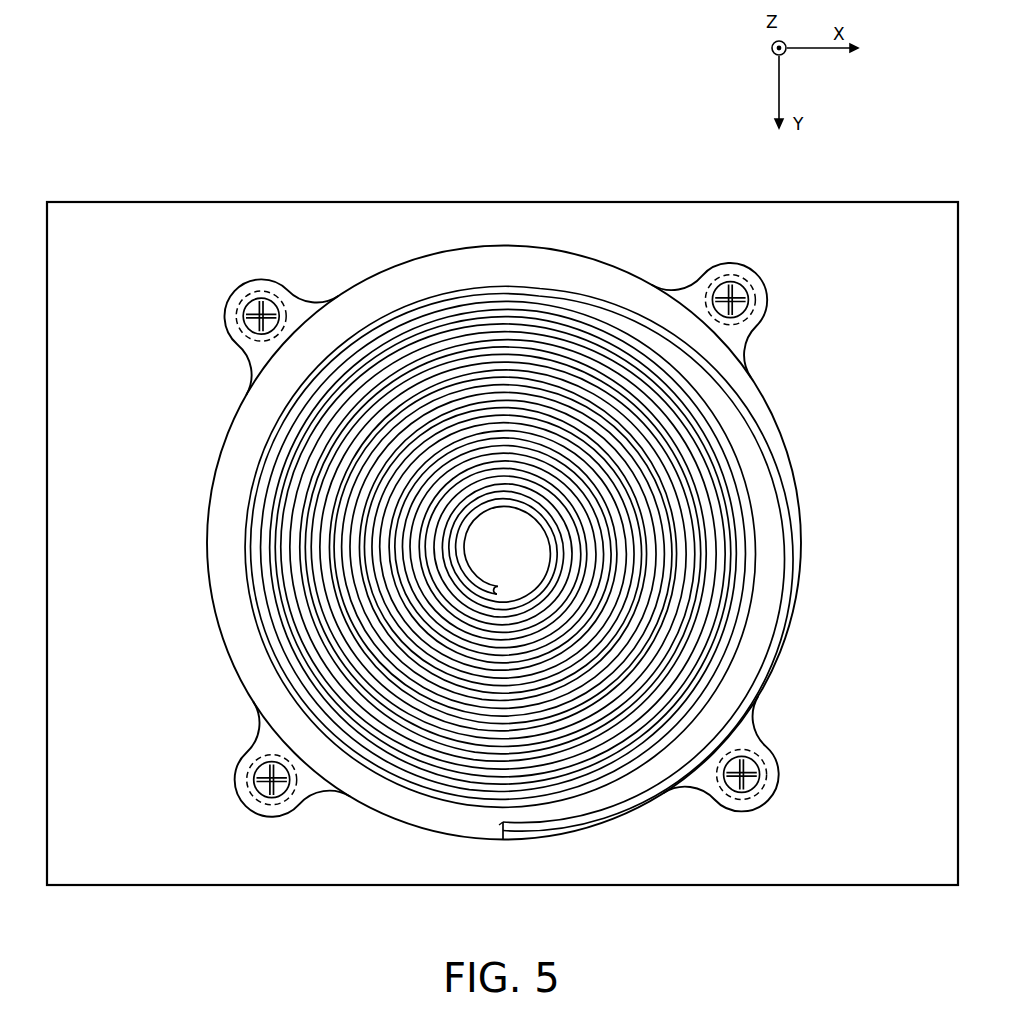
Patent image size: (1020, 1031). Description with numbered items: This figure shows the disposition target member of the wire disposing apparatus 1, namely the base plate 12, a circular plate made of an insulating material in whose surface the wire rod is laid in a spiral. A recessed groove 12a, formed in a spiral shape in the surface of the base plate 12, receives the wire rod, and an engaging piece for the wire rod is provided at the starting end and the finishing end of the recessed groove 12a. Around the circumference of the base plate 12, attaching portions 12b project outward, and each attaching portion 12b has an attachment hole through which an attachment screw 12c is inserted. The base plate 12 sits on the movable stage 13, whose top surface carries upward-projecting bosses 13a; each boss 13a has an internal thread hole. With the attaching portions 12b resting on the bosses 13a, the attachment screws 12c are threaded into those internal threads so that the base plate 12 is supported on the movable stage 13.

The coil device 1 is at (502, 832).
The base plate 12 is at (803, 470).
The recessed groove 12a is at (772, 578).
The attaching portions 12b is at (232, 338).
The attachment screw 12c is at (280, 300).
The movable stage 13 is at (433, 202).
The bosses 13a is at (291, 301).